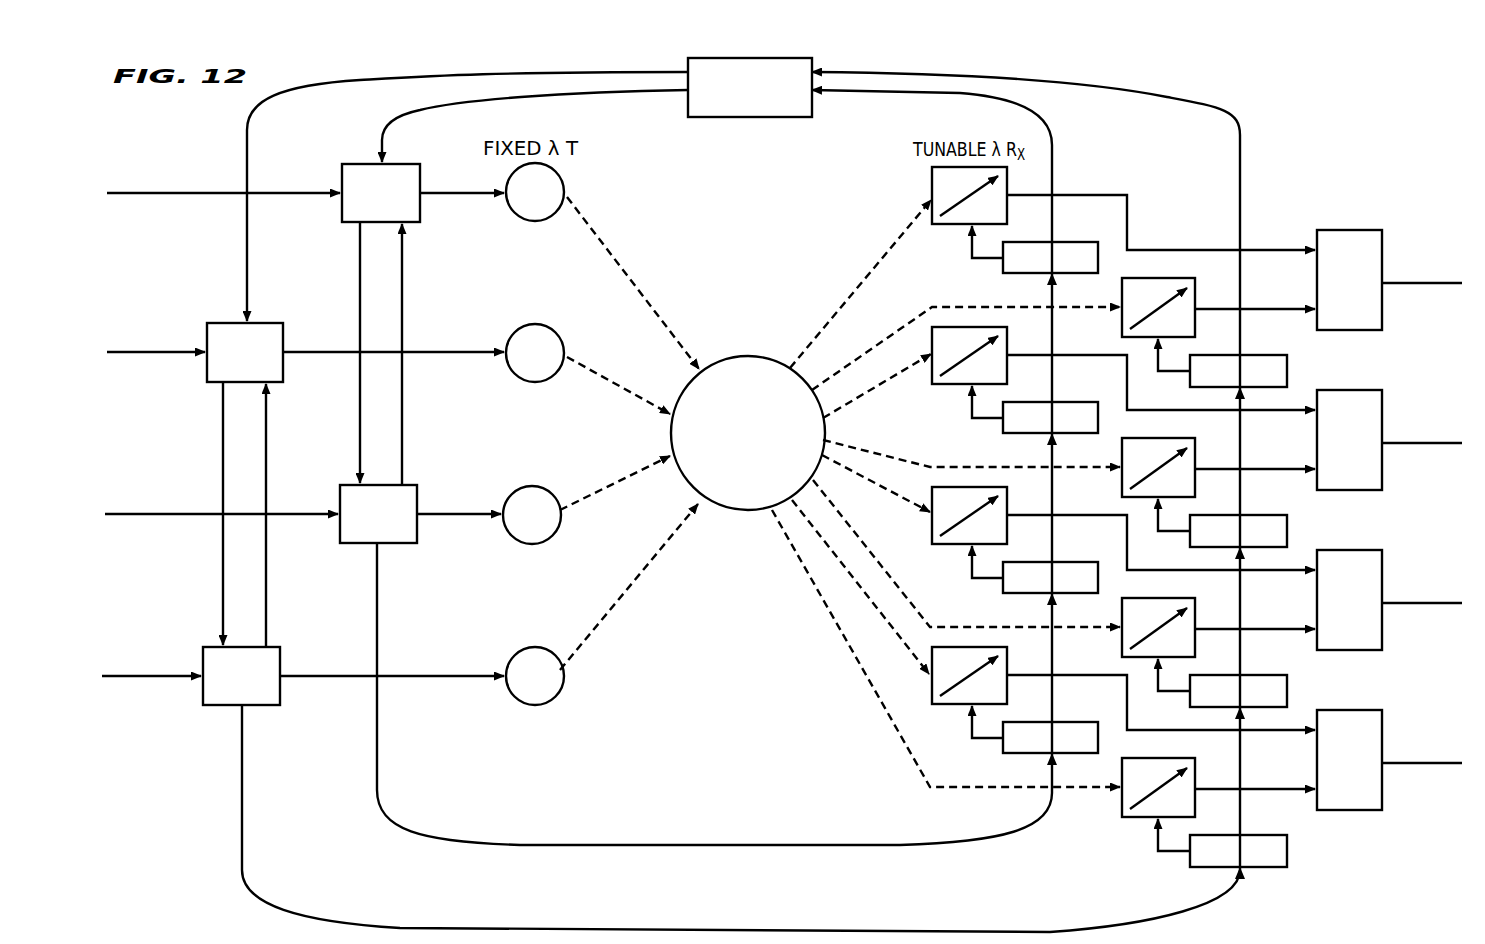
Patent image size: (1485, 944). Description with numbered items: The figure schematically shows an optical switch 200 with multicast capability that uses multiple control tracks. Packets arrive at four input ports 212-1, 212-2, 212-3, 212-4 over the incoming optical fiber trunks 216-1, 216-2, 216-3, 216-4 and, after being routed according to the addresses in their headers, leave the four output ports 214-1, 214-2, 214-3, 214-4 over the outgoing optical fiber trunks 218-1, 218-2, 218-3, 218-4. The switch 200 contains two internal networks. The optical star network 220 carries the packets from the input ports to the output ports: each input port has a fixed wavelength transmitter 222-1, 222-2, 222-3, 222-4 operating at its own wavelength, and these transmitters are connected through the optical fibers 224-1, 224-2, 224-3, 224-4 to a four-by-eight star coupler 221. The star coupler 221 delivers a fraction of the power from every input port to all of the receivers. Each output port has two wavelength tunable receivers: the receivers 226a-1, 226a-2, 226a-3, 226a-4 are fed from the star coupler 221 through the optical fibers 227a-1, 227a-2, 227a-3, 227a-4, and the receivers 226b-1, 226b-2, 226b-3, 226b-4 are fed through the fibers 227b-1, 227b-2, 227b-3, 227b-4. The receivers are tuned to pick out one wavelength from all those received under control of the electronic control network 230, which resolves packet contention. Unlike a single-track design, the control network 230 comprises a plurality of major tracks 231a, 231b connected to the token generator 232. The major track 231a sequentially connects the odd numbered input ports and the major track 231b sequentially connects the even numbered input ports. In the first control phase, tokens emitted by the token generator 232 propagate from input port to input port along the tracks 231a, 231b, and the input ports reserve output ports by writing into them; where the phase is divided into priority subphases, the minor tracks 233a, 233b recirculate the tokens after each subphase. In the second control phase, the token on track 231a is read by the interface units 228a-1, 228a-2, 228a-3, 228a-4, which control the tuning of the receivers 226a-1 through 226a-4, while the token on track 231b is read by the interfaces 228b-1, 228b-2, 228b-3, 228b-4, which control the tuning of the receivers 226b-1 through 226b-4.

The optical switch 200 is at (1313, 101).
The input port 212-1 is at (400, 163).
The input port 212-2 is at (265, 322).
The input port 212-3 is at (413, 484).
The input port 212-4 is at (273, 646).
The output port 214-1 is at (1382, 262).
The output port 214-2 is at (1382, 422).
The output port 214-3 is at (1382, 582).
The output port 214-4 is at (1382, 742).
The incoming optical fiber trunk 216-1 is at (143, 191).
The incoming optical fiber trunk 216-2 is at (143, 350).
The incoming optical fiber trunk 216-3 is at (141, 512).
The incoming optical fiber trunk 216-4 is at (140, 674).
The outgoing optical fiber trunk 218-1 is at (1438, 285).
The outgoing optical fiber trunk 218-2 is at (1438, 445).
The outgoing optical fiber trunk 218-3 is at (1438, 605).
The outgoing optical fiber trunk 218-4 is at (1438, 765).
The optical star network 220 is at (755, 209).
The star coupler 221 is at (748, 356).
The fixed wavelength transmitter 222-1 is at (535, 221).
The fixed wavelength transmitter 222-2 is at (535, 382).
The fixed wavelength transmitter 222-3 is at (532, 544).
The fixed wavelength transmitter 222-4 is at (535, 705).
The optical fiber 224-1 is at (680, 332).
The optical fiber 224-2 is at (605, 370).
The optical fiber 224-3 is at (603, 487).
The optical fiber 224-4 is at (615, 605).
The receiver 226a-1 is at (931, 185).
The receiver 226a-2 is at (943, 326).
The receiver 226a-3 is at (937, 545).
The receiver 226a-4 is at (950, 706).
The receiver 226b-1 is at (1150, 278).
The receiver 226b-2 is at (1150, 438).
The receiver 226b-3 is at (1150, 598).
The receiver 226b-4 is at (1150, 758).
The optical fiber 227a-1 is at (848, 302).
The optical fiber 227a-2 is at (896, 376).
The optical fiber 227a-3 is at (888, 490).
The optical fiber 227a-4 is at (840, 560).
The optical fiber 227b-1 is at (903, 327).
The optical fiber 227b-2 is at (905, 460).
The optical fiber 227b-3 is at (950, 628).
The optical fiber 227b-4 is at (860, 668).
The interface unit 228a-1 is at (1085, 241).
The interface unit 228a-2 is at (1085, 401).
The interface unit 228a-3 is at (1085, 561).
The interface unit 228a-4 is at (1085, 721).
The interface 228b-1 is at (1287, 378).
The interface 228b-2 is at (1287, 538).
The interface 228b-3 is at (1287, 698).
The interface 228b-4 is at (1287, 858).
The electronic control network 230 is at (400, 66).
The major track 231a is at (378, 750).
The major track 231b is at (243, 802).
The token generator 232 is at (727, 117).
The minor track 233a is at (403, 272).
The minor track 233b is at (267, 438).